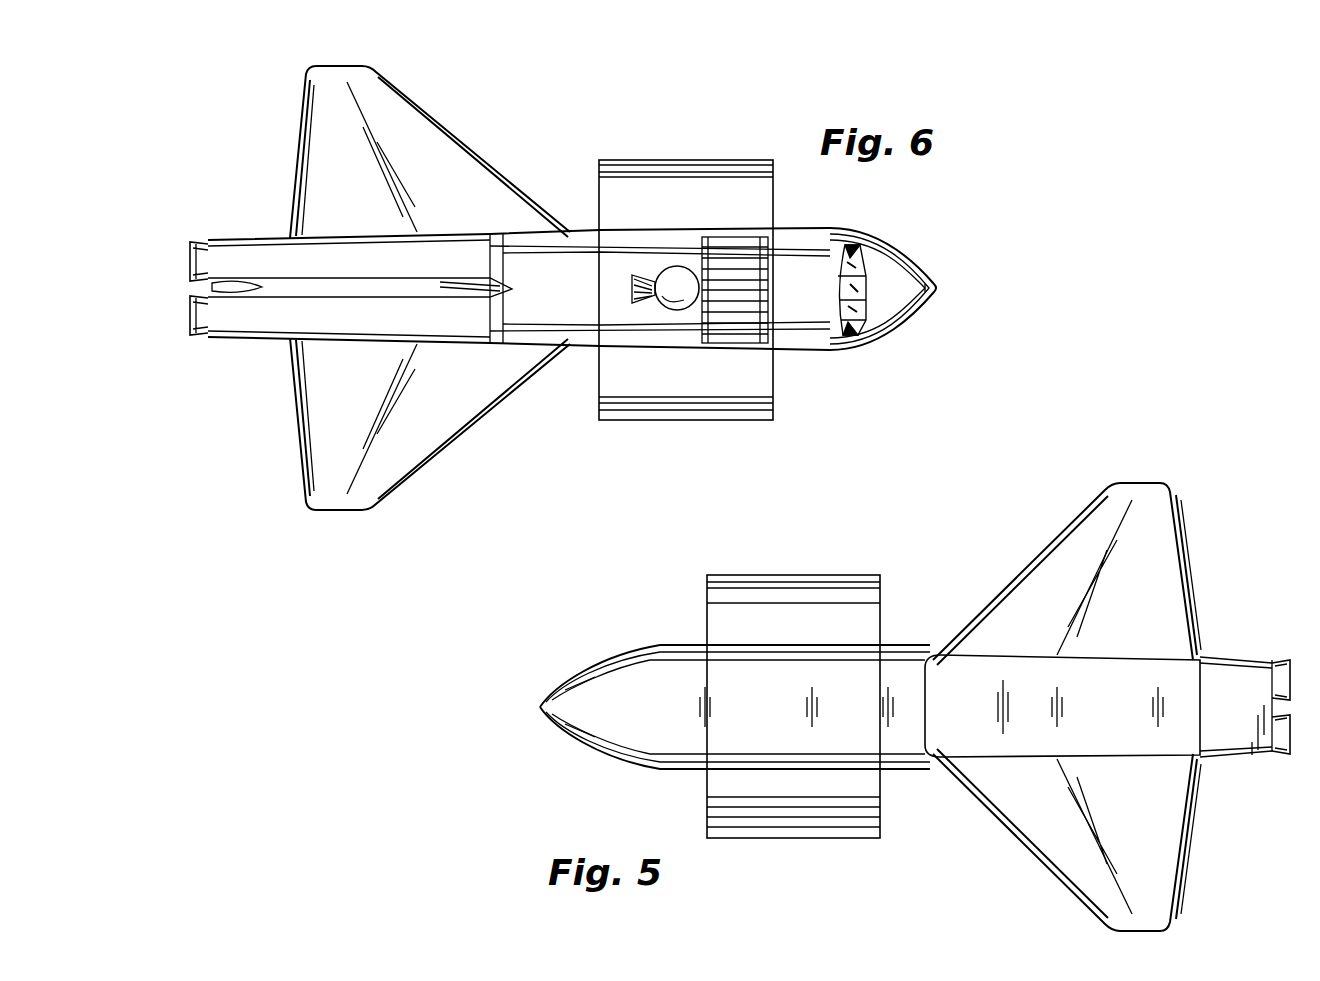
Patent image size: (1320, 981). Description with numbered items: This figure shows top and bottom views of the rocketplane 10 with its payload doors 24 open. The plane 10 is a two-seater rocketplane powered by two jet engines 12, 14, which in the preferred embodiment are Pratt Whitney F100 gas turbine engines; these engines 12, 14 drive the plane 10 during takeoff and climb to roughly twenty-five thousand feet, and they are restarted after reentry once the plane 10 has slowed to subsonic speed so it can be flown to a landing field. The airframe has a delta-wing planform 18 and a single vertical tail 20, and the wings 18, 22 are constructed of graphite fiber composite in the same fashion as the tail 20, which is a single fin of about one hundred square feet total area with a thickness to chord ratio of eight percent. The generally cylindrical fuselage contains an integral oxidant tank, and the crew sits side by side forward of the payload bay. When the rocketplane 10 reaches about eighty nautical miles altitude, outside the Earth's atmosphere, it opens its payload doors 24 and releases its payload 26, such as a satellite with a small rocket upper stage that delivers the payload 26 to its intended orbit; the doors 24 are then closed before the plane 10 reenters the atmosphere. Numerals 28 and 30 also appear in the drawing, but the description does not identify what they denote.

In FIG. 6, the plane 10 is at (730, 152).
In FIG. 5, the plane 10 is at (862, 848).
In FIG. 6, the jet engine 12 is at (196, 338).
In FIG. 6, the jet engine 14 is at (196, 240).
In FIG. 6, the delta-wing planform 18 is at (400, 420).
In FIG. 5, the delta-wing planform 18 is at (1035, 823).
In FIG. 6, the vertical tail 20 is at (446, 282).
In FIG. 6, the wing 22 is at (432, 174).
In FIG. 5, the wing 22 is at (1073, 557).
In FIG. 6, the payload doors 24 is at (655, 170).
In FIG. 5, the payload doors 24 is at (843, 608).
In FIG. 6, the payload 26 is at (738, 318).
In FIG. 6, the cockpit windows 28 is at (845, 248).
In FIG. 6, the nose 30 is at (930, 283).
In FIG. 5, the nose 30 is at (685, 735).